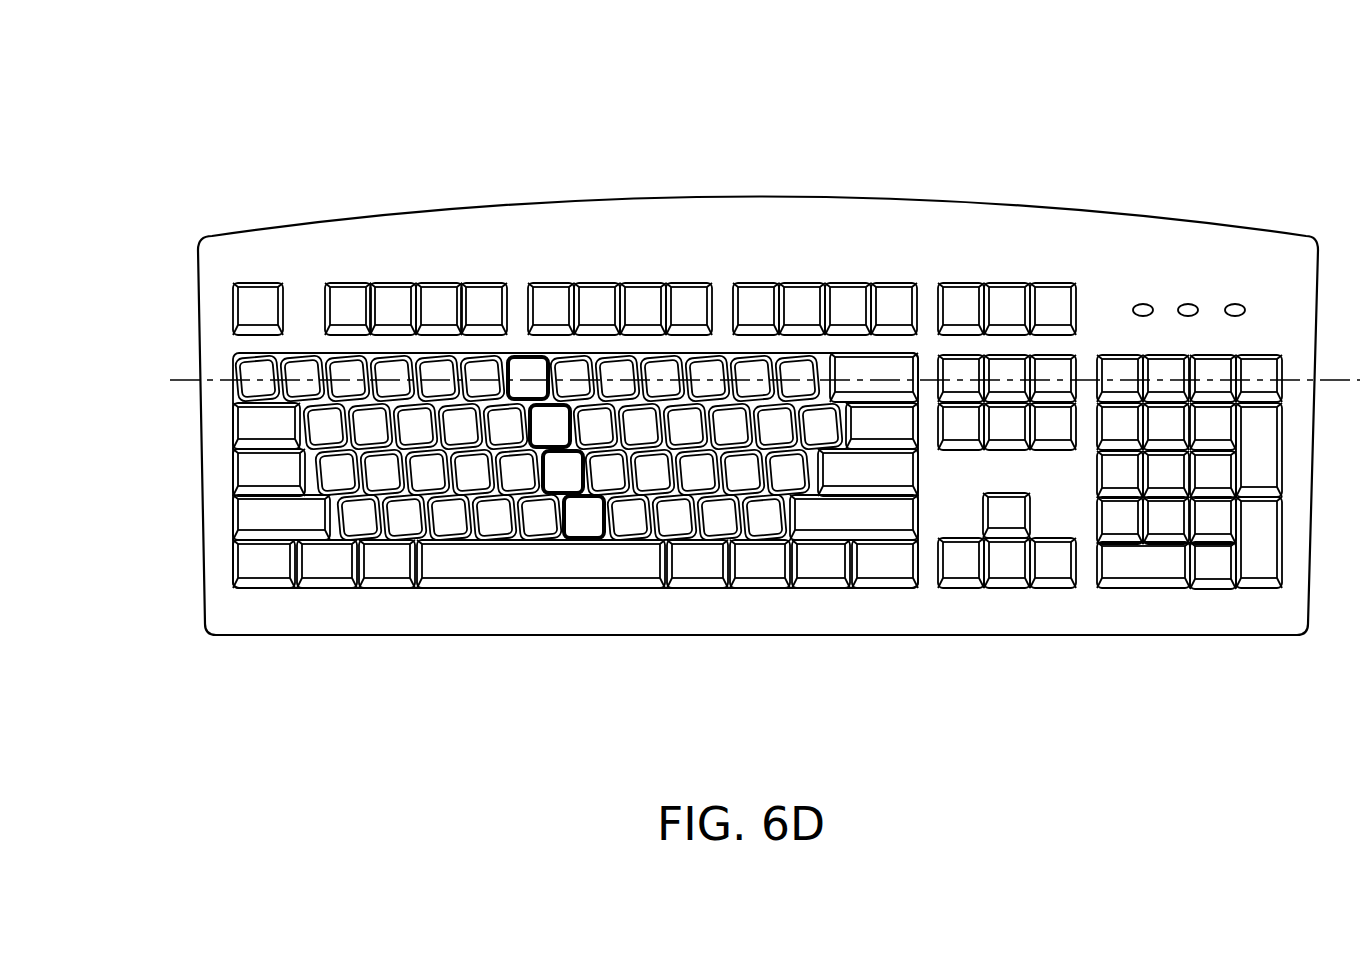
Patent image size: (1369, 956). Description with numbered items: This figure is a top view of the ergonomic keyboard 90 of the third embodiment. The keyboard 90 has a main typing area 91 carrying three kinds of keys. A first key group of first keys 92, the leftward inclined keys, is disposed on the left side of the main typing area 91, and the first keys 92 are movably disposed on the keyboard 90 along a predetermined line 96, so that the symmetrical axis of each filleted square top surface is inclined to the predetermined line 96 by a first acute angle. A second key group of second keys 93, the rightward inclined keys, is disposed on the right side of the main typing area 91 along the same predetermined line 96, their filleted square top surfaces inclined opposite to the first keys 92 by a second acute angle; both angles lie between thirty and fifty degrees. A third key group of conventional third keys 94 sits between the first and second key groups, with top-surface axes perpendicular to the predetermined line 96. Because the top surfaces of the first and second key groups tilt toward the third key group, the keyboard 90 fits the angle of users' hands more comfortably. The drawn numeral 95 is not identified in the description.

The keyboard 90 is at (174, 96).
The main typing area 91 is at (880, 590).
The first key 92 is at (566, 378).
The second key 93 is at (482, 375).
The third key 94 is at (522, 378).
The numeric keypad key 95 is at (1120, 372).
The predetermined line 96 is at (746, 381).